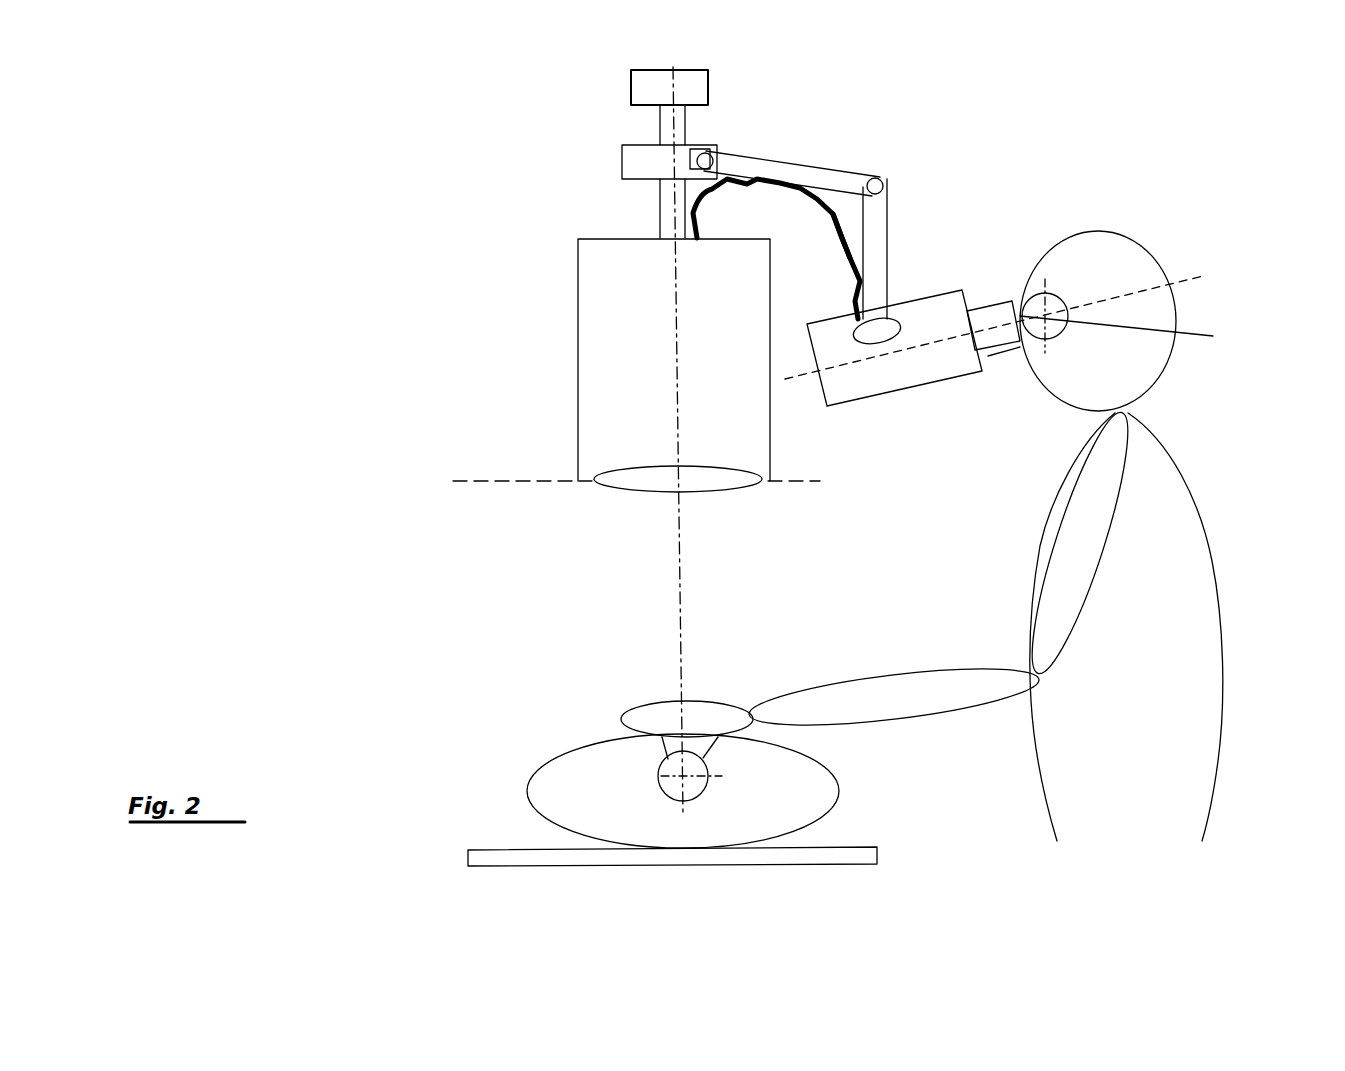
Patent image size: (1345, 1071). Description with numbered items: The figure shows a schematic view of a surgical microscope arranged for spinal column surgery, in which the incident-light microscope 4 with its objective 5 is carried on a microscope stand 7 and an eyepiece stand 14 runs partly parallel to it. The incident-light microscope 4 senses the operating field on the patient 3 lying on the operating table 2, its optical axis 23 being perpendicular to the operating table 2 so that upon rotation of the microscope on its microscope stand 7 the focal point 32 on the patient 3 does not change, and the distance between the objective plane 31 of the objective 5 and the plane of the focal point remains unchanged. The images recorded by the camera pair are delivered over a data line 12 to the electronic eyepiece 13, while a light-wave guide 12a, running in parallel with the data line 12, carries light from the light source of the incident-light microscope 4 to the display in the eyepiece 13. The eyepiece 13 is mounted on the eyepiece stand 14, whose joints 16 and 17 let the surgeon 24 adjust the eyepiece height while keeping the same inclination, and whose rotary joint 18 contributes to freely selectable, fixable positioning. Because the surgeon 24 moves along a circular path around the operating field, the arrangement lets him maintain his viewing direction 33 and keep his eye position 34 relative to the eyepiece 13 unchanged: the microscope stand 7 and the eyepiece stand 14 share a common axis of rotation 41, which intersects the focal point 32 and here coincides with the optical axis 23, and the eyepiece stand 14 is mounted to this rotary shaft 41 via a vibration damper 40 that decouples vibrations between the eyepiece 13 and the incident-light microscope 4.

The operating table 2 is at (823, 852).
The patient 3 is at (803, 797).
The incident-light microscope 4 is at (632, 305).
The objective 5 is at (655, 482).
The microscope stand 7 is at (680, 188).
The data line 12 is at (835, 238).
The light-wave guide 12a is at (813, 202).
The electronic eyepiece 13 is at (877, 373).
The eyepiece stand 14 is at (877, 240).
The joint 16 is at (710, 160).
The joint 17 is at (875, 185).
The rotary joint 18 is at (877, 325).
The optical axis 23 is at (675, 345).
The surgeon 24 is at (1158, 535).
The objective plane 31 is at (525, 480).
The focal point 32 is at (655, 775).
The viewing direction 33 is at (1177, 287).
The eye position 34 is at (1138, 316).
The vibration damper 40 is at (672, 152).
The axis of rotation 41 is at (672, 90).